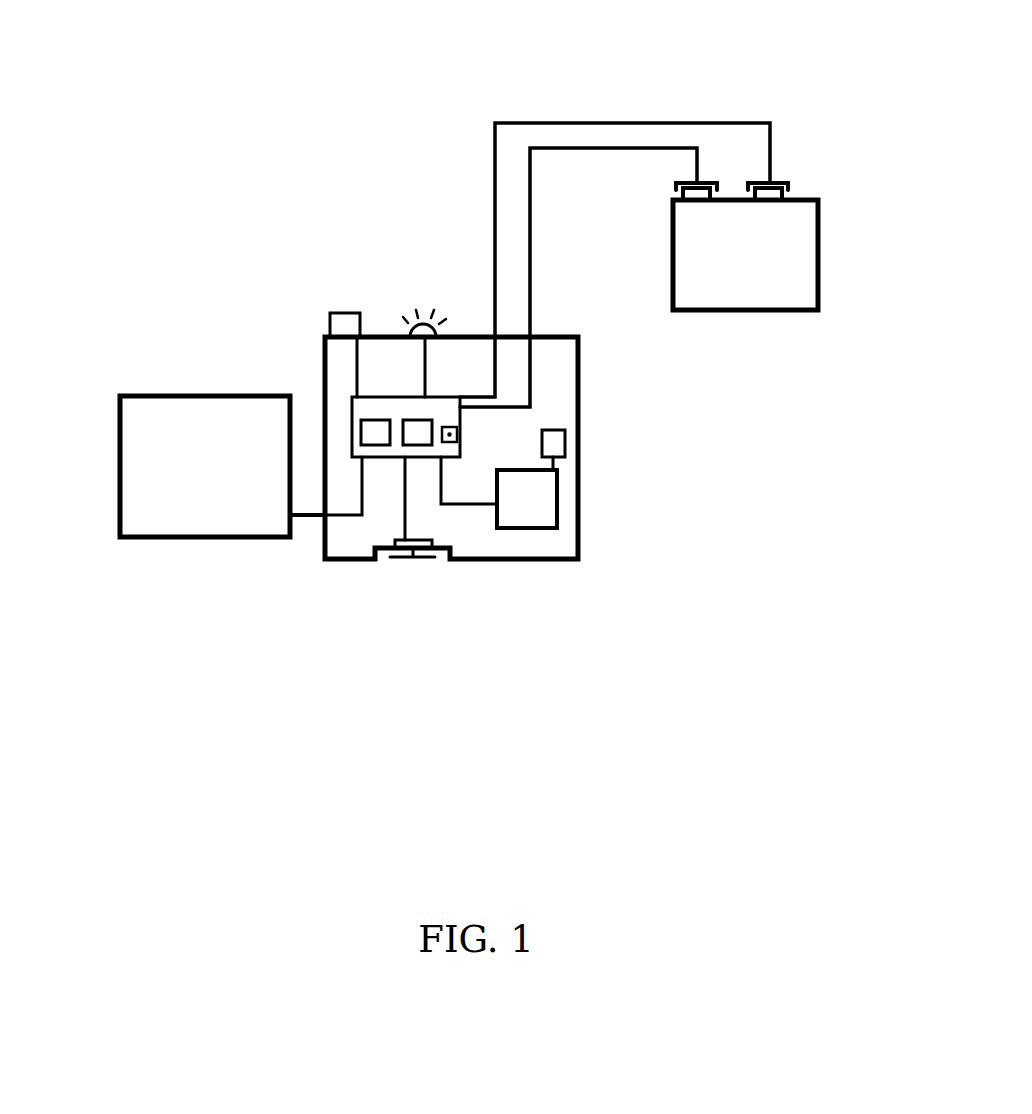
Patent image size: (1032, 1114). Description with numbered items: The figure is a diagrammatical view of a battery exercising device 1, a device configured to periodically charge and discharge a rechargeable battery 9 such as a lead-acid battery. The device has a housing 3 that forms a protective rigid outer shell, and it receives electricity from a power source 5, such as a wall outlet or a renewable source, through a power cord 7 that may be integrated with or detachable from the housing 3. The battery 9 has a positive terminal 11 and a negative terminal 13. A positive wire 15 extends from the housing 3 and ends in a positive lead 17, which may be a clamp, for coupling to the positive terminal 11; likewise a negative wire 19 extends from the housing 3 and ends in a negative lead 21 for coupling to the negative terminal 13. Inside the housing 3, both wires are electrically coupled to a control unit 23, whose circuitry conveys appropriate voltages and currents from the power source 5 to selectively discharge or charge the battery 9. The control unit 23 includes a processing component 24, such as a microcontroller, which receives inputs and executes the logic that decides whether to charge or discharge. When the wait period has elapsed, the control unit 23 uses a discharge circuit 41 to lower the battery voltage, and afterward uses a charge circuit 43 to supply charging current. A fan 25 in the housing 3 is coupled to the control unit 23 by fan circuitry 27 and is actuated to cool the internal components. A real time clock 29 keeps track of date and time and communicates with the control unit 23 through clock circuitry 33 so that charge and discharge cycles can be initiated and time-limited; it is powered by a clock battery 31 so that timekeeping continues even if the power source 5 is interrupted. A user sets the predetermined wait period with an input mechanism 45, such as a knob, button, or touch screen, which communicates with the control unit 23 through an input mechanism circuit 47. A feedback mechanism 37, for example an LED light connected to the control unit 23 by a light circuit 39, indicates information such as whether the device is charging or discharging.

The battery exercising device 1 is at (167, 213).
The housing 3 is at (323, 362).
The power source 5 is at (148, 500).
The power cord 7 is at (307, 518).
The rechargeable battery 9 is at (793, 287).
The positive terminal 11 is at (787, 192).
The negative terminal 13 is at (682, 183).
The positive wire 15 is at (512, 123).
The positive lead 17 is at (777, 183).
The negative wire 19 is at (585, 147).
The negative lead 21 is at (708, 182).
The control unit 23 is at (378, 460).
The processing component 24 is at (462, 439).
The fan 25 is at (425, 560).
The fan circuitry 27 is at (388, 547).
The real time clock 29 is at (538, 515).
The clock battery 31 is at (560, 443).
The clock circuitry 33 is at (467, 505).
The feedback mechanism 37 is at (420, 322).
The light circuit 39 is at (427, 367).
The discharge circuit 41 is at (372, 432).
The charge circuit 43 is at (415, 431).
The input mechanism 45 is at (352, 322).
The input mechanism circuit 47 is at (359, 363).